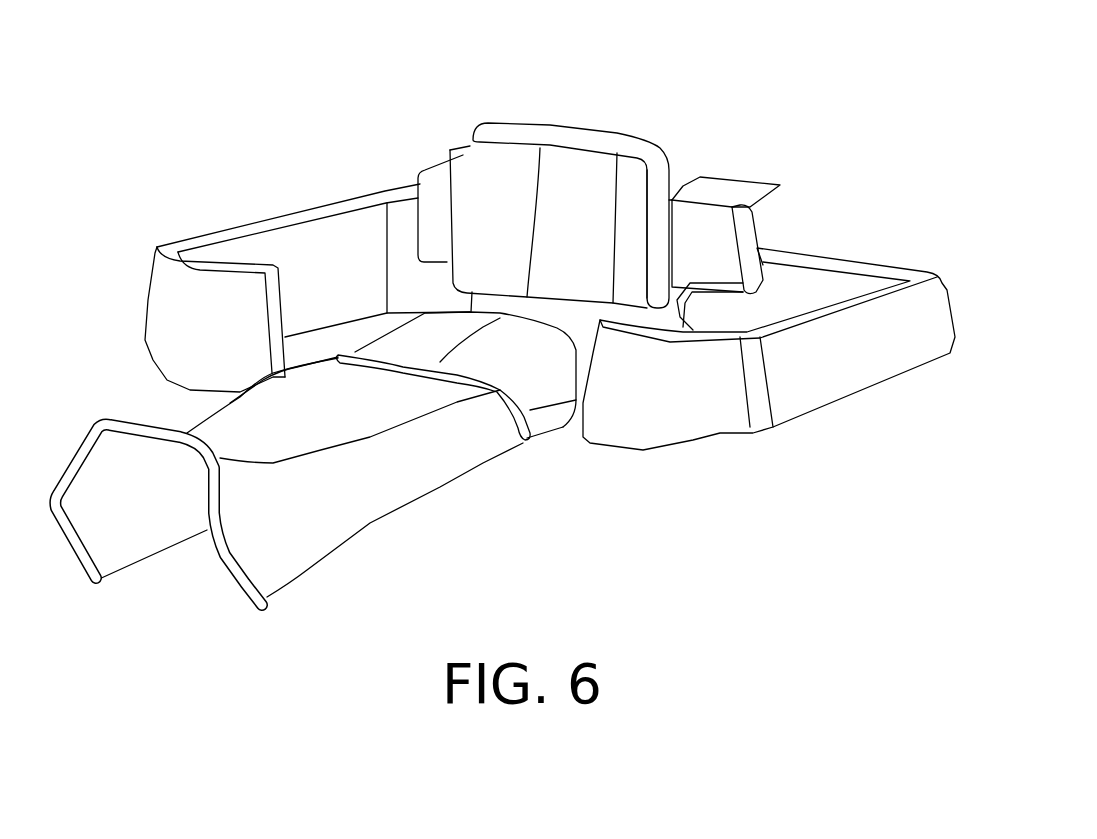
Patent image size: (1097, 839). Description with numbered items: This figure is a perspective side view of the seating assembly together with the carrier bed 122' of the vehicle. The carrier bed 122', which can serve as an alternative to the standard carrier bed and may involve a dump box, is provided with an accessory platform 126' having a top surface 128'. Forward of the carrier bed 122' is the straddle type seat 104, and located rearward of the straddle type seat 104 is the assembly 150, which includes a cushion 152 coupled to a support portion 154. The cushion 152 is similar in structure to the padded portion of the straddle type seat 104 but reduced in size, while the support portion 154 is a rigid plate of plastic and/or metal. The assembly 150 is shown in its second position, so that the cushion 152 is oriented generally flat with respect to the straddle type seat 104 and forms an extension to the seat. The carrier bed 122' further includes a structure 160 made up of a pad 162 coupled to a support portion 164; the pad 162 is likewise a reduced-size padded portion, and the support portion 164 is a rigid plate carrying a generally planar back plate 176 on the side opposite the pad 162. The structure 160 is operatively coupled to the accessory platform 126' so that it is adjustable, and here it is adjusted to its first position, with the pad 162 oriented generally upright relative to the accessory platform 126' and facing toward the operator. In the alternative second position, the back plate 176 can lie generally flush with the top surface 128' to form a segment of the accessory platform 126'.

The straddle type seat 104 is at (307, 537).
The carrier bed 122' is at (769, 282).
The accessory platform 126' is at (418, 226).
The top surface 128' is at (308, 276).
The assembly 150 is at (445, 463).
The cushion 152 is at (553, 346).
The support portion 154 is at (555, 420).
The structure 160 is at (616, 160).
The pad 162 is at (505, 153).
The support portion 164 is at (670, 158).
The back plate 176 is at (738, 210).